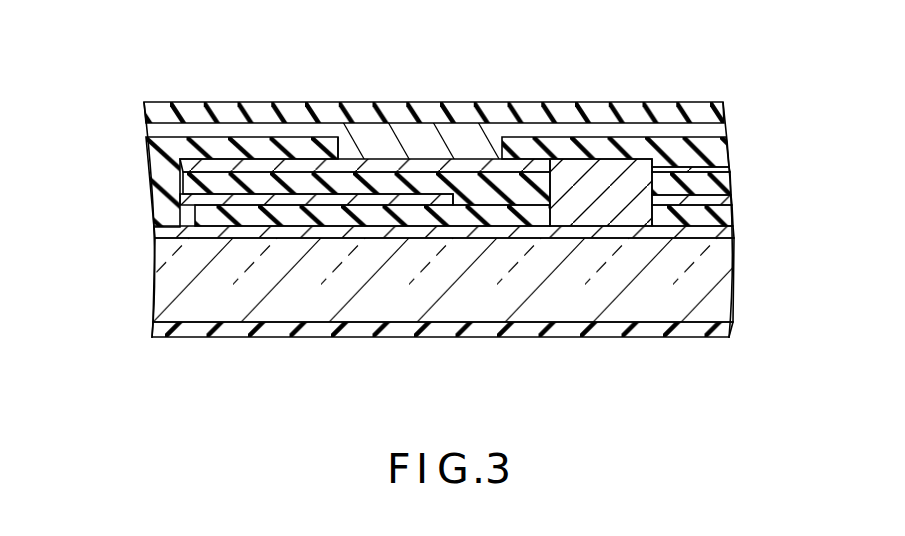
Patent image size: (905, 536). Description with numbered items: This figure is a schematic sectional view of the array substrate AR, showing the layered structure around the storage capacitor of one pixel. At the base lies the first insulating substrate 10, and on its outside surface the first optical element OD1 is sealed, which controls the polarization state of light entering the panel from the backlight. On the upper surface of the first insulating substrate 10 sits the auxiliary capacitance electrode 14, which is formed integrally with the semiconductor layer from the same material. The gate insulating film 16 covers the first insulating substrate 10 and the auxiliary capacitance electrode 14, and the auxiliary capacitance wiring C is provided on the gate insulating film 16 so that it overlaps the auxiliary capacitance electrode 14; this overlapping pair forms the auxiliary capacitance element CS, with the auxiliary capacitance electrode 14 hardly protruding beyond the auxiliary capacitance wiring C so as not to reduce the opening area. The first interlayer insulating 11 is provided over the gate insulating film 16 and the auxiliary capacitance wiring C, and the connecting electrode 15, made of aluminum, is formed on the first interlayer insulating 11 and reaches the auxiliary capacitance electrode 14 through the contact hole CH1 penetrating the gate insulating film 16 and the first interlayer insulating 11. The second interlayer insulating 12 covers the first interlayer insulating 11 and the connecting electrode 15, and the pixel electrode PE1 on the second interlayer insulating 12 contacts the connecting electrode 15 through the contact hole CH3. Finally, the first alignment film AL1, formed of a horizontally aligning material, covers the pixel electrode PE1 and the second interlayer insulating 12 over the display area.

The first alignment film AL1 is at (712, 110).
The pixel electrode PE1 is at (449, 137).
The connecting electrode 15 is at (183, 164).
The contact hole CH3 is at (346, 137).
The second interlayer insulating 12 is at (715, 153).
The contact hole CH1 is at (559, 140).
The auxiliary capacitance element CS is at (291, 199).
The auxiliary capacitance wiring C is at (180, 195).
The auxiliary capacitance electrode 14 is at (187, 228).
The first interlayer insulating 11 is at (712, 185).
The gate insulating film 16 is at (713, 218).
The first insulating substrate 10 is at (712, 272).
The first optical element OD1 is at (727, 330).
The array substrate AR is at (126, 342).